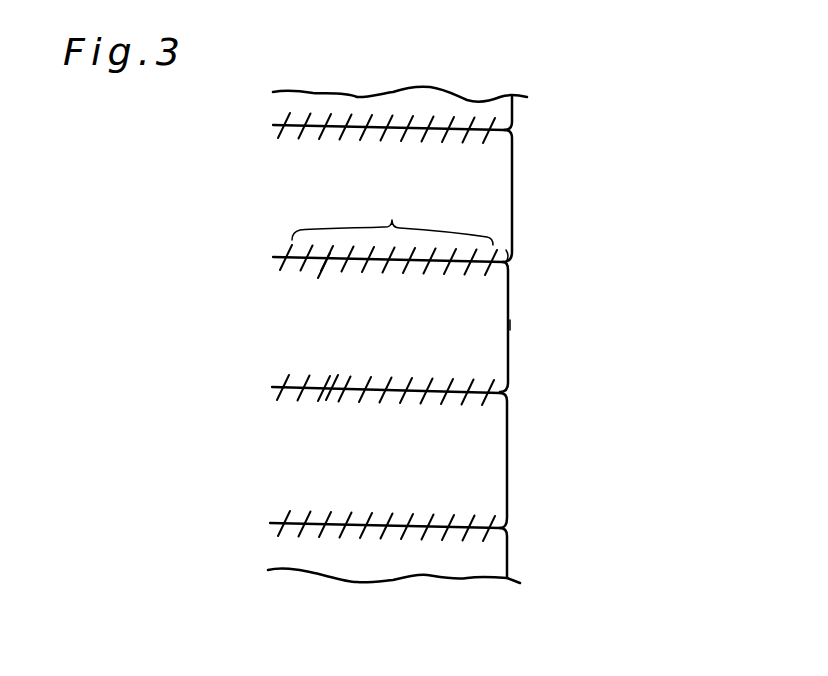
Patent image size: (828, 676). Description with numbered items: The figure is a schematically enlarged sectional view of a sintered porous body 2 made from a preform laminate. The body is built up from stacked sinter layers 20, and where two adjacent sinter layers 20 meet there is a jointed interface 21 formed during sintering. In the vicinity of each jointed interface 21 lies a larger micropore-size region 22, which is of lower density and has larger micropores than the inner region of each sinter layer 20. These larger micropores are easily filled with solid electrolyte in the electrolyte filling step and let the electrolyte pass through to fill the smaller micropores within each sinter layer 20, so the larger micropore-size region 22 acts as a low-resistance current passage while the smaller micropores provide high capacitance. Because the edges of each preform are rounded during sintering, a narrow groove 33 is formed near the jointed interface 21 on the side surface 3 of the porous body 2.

The sintered porous body 2 is at (658, 110).
The side surface 3 is at (543, 342).
The sinter layer 20 is at (487, 184).
The jointed interface 21 is at (338, 387).
The larger micropore-size region 22 is at (392, 218).
The narrow groove 33 is at (518, 263).